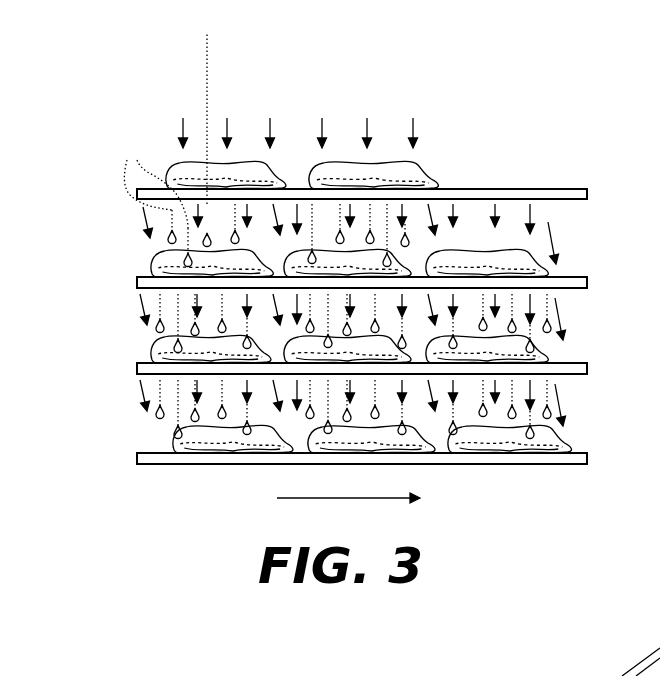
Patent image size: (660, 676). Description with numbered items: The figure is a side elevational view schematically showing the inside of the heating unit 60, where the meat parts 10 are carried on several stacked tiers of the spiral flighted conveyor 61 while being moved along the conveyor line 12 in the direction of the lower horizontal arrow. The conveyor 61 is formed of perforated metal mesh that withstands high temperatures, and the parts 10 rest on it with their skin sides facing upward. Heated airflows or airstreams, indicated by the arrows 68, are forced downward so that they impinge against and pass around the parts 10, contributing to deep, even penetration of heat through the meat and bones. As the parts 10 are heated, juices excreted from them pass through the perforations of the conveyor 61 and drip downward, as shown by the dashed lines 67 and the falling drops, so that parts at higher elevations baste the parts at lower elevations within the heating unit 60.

The parts 10 is at (412, 167).
The conveyor line 12 is at (353, 499).
The heating unit 60 is at (124, 304).
The spiral flighted conveyor 61 is at (592, 188).
The dashed lines 67 is at (155, 182).
The arrows 68 is at (272, 122).